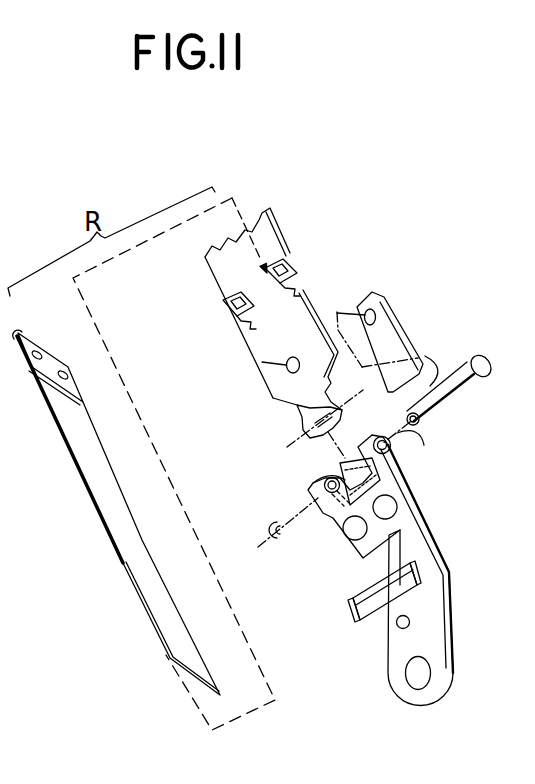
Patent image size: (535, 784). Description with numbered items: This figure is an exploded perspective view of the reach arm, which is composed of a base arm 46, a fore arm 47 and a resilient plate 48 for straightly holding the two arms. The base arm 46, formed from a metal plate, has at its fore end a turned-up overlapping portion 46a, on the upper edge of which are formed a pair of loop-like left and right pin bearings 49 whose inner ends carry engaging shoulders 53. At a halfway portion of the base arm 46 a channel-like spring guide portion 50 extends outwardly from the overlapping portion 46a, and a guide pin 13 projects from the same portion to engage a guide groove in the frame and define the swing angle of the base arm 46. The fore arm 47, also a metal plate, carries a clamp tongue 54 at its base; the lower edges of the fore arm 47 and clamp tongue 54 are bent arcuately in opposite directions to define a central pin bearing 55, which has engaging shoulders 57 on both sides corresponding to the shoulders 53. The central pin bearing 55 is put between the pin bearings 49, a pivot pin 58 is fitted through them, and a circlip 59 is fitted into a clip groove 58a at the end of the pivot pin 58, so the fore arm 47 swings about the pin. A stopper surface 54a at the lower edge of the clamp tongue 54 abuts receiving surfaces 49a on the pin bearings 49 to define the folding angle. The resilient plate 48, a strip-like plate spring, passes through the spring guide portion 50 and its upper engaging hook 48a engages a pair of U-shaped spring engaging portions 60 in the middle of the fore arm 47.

The guide pin 13 is at (413, 620).
The base arm 46 is at (432, 533).
The turned-up overlapping portion 46a is at (407, 485).
The fore arm 47 is at (283, 236).
The resilient plate 48 is at (103, 528).
The engaging hook 48a is at (74, 382).
The pin bearing 49 is at (318, 498).
The receiving surface 49a is at (336, 520).
The spring guide portion 50 is at (373, 622).
The engaging shoulder 53 is at (342, 461).
The clamp tongue 54 is at (393, 332).
The stopper surface 54a is at (413, 357).
The central pin bearing 55 is at (399, 420).
The engaging shoulder 57 is at (291, 418).
The pivot pin 58 is at (457, 395).
The clip groove 58a is at (412, 440).
The circlip 59 is at (270, 527).
The spring engaging portion 60 is at (298, 272).